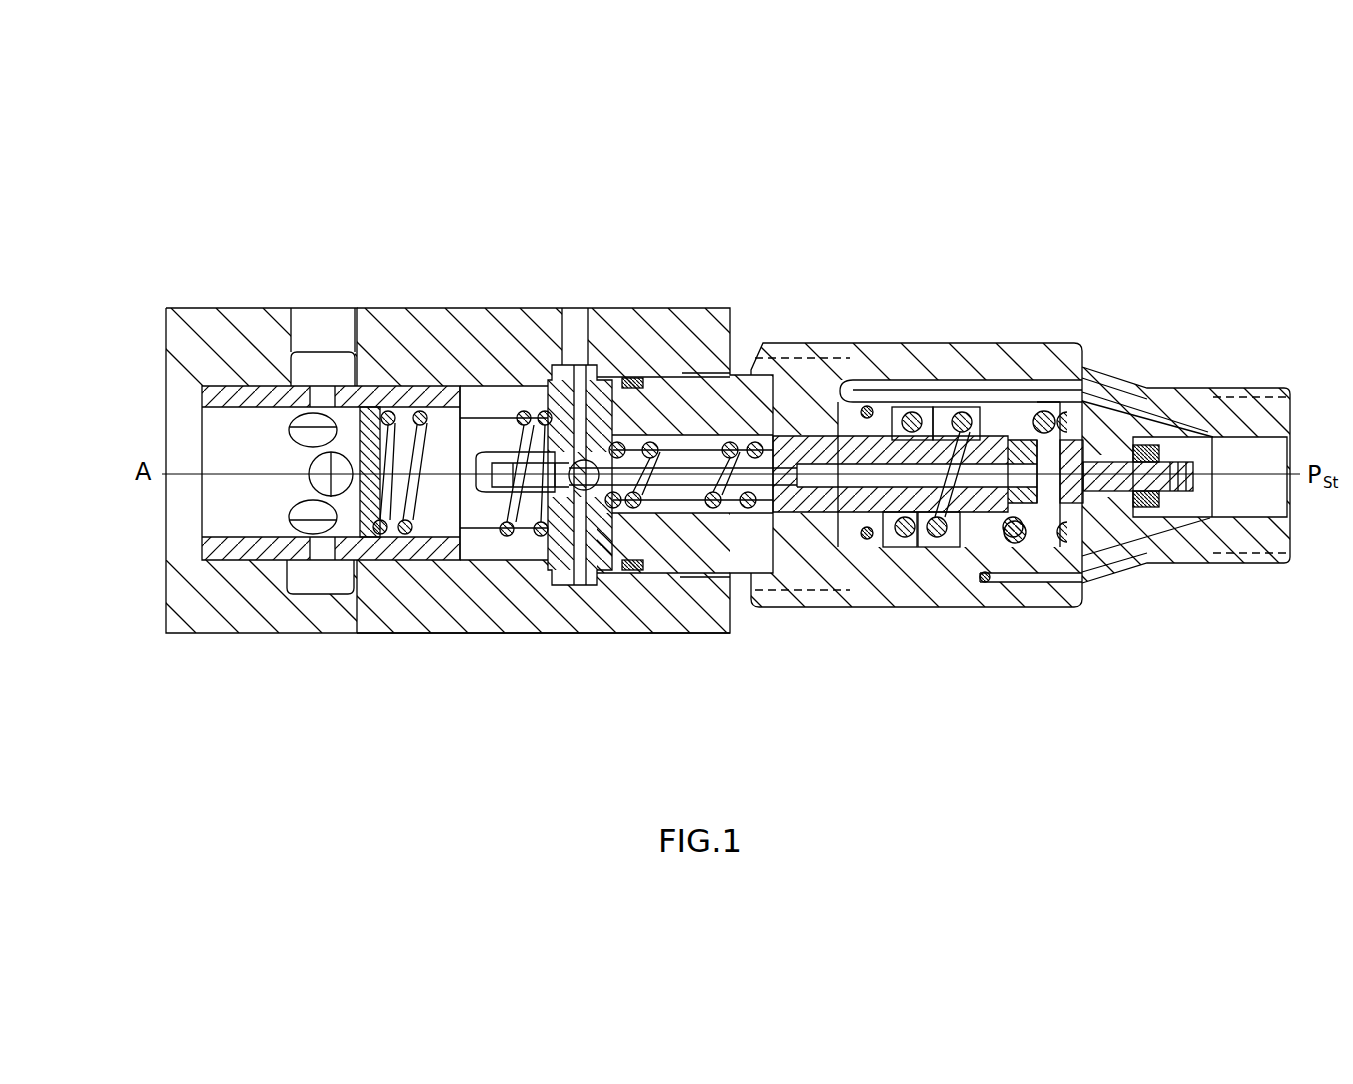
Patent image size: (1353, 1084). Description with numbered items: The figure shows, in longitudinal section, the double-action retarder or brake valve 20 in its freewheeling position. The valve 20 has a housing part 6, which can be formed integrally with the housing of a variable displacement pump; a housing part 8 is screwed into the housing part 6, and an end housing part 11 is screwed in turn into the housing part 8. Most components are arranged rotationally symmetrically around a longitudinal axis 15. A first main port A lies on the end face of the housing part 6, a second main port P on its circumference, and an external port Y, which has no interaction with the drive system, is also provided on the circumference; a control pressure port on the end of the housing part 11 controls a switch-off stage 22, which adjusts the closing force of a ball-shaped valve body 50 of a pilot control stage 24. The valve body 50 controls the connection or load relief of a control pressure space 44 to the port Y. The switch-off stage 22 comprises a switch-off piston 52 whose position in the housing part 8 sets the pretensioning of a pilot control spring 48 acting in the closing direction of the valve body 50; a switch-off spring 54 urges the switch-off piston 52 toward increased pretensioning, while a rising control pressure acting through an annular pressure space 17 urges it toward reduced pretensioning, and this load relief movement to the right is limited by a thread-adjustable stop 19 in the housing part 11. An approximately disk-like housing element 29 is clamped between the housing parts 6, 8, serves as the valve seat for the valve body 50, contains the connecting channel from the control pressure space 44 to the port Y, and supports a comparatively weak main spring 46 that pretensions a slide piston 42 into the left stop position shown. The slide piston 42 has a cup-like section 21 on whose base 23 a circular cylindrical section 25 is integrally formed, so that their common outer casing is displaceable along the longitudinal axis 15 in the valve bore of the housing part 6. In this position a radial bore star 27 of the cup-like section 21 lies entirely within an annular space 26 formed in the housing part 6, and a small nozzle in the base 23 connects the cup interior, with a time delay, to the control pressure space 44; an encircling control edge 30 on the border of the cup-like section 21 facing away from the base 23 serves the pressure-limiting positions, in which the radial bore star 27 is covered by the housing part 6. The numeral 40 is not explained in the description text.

The brake valve 20 is at (188, 265).
The housing part 6 is at (231, 340).
The annular space 26 is at (310, 362).
The valve body 40 is at (419, 283).
The housing element 29 is at (546, 387).
The pilot control stage 24 is at (614, 287).
The housing part 8 is at (792, 400).
The switch-off stage 22 is at (897, 320).
The stop 19 is at (1115, 456).
The longitudinal axis 15 is at (262, 470).
The radial bore star 27 is at (272, 492).
The control edge 30 is at (225, 557).
The cup-like section 21 is at (246, 560).
The base 23 is at (370, 560).
The circular cylindrical section 25 is at (428, 562).
The slide piston 42 is at (390, 620).
The main spring 46 is at (508, 505).
The control pressure space 44 is at (522, 550).
The valve body 50 is at (568, 585).
The pilot control spring 48 is at (716, 505).
The annular pressure space 17 is at (816, 545).
The switch-off piston 52 is at (882, 607).
The switch-off spring 54 is at (1005, 583).
The end housing part 11 is at (1120, 535).